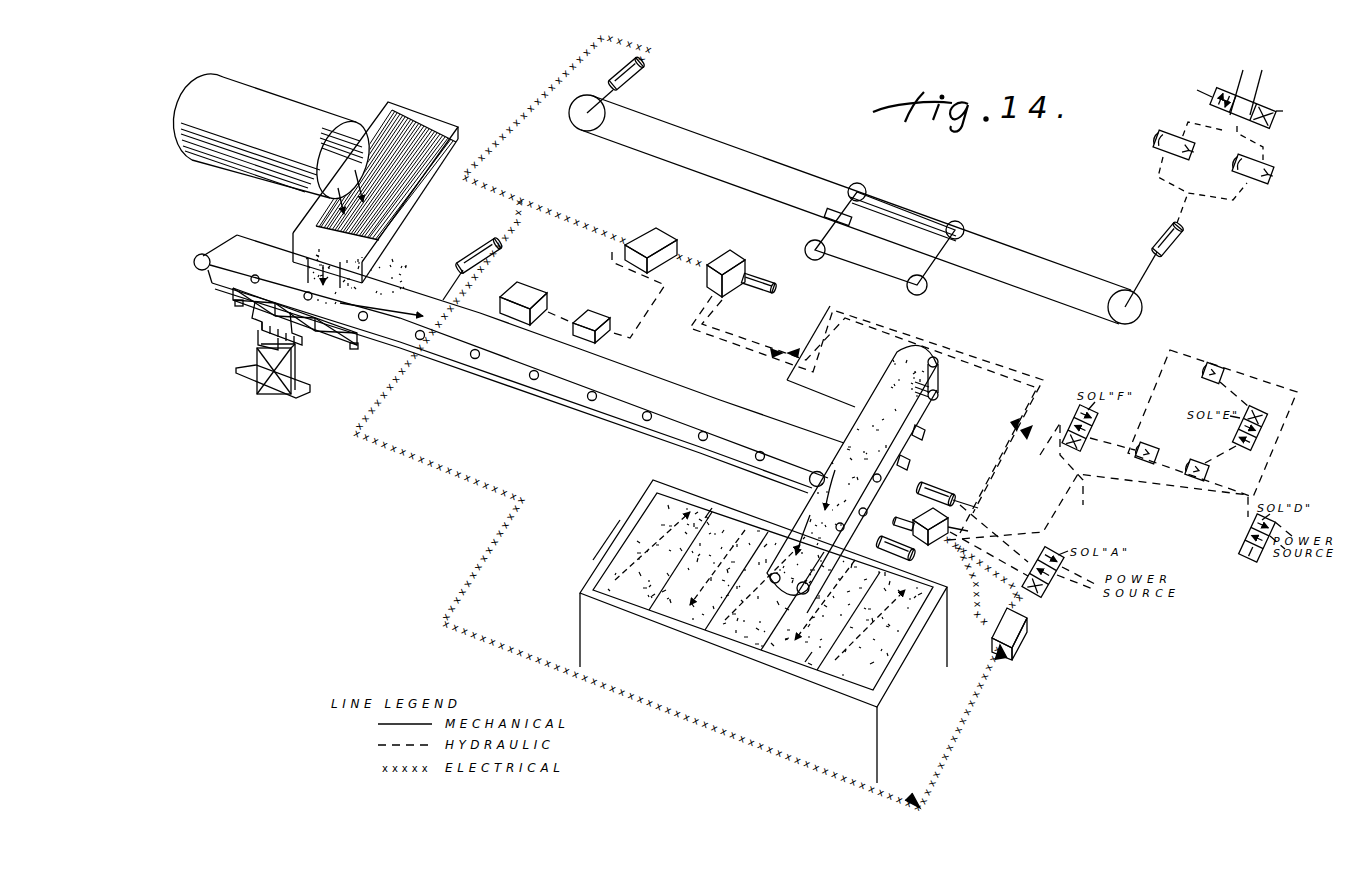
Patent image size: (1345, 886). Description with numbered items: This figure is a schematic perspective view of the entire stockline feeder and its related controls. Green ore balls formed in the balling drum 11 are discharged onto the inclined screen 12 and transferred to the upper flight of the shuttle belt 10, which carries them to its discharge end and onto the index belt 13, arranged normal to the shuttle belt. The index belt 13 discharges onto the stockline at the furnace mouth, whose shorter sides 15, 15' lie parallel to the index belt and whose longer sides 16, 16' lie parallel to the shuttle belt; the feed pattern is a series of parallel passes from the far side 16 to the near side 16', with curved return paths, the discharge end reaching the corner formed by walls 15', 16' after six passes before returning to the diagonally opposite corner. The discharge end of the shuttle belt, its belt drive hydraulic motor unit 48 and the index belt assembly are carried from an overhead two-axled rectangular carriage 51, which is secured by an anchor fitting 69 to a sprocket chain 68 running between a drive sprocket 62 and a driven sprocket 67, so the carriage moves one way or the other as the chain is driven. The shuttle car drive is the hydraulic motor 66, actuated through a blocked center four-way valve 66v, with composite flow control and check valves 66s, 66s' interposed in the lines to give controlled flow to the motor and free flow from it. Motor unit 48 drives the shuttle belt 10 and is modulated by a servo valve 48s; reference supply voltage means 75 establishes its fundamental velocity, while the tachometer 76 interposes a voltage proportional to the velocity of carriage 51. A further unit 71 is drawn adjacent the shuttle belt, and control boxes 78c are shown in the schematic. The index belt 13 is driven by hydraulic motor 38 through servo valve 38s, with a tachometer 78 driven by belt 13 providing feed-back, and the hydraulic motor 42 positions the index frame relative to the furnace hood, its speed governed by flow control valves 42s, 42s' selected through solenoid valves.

The shuttle belt 10 is at (695, 374).
The balling drum 11 is at (297, 112).
The inclined screen 12 is at (387, 217).
The index belt 13 is at (883, 382).
The shorter side of furnace mouth 15 is at (763, 631).
The shorter side of furnace mouth 15' is at (602, 534).
The longer side of furnace mouth 16 is at (790, 684).
The longer side of furnace mouth 16' is at (717, 492).
The hydraulic motor 38 is at (914, 522).
The servo valve 38s is at (968, 530).
The hydraulic motor 42 is at (960, 481).
The flow control valve 42s is at (1153, 438).
The flow control valve 42s' is at (1218, 461).
The belt drive hydraulic motor unit 48 is at (762, 286).
The servo valve 48s is at (722, 262).
The rectangular carriage 51 is at (870, 266).
The drive sprocket 62 is at (1141, 307).
The hydraulic motor 66 is at (1157, 241).
The composite flow control and check valve 66s is at (1153, 140).
The limit switch 66s' is at (1272, 177).
The multi-directional valve 66v is at (1271, 121).
The driven sprocket 67 is at (588, 117).
The sprocket chain 68 is at (778, 166).
The anchor fitting 69 is at (826, 214).
The hydraulic cylinder 71 is at (478, 256).
The reference supply voltage means 75 is at (533, 292).
The tachometer 76 is at (642, 78).
The tachometer 78 is at (894, 542).
The control box 78c is at (650, 236).